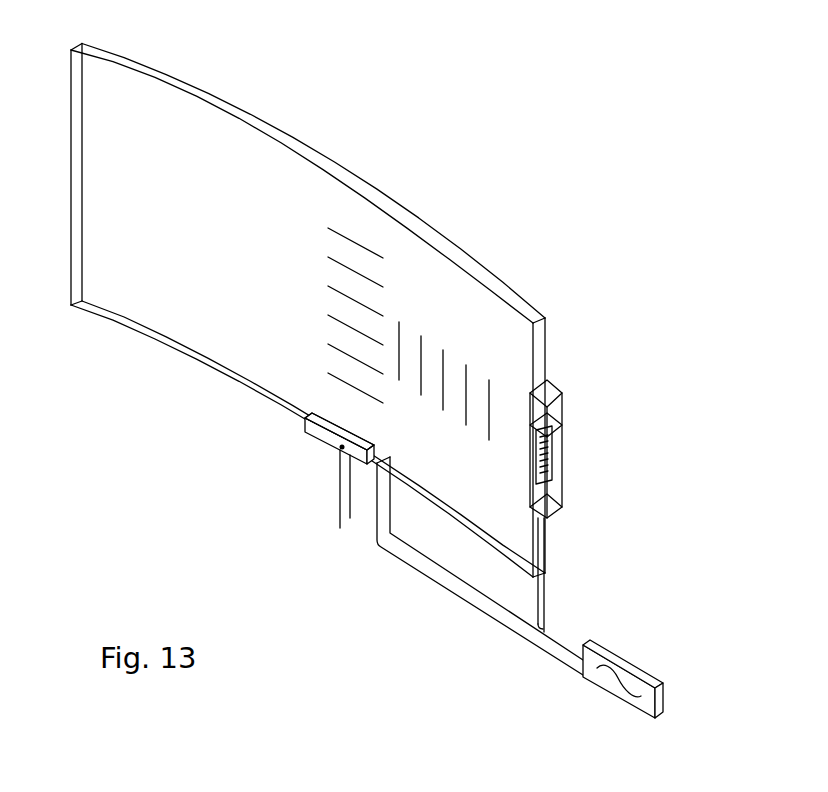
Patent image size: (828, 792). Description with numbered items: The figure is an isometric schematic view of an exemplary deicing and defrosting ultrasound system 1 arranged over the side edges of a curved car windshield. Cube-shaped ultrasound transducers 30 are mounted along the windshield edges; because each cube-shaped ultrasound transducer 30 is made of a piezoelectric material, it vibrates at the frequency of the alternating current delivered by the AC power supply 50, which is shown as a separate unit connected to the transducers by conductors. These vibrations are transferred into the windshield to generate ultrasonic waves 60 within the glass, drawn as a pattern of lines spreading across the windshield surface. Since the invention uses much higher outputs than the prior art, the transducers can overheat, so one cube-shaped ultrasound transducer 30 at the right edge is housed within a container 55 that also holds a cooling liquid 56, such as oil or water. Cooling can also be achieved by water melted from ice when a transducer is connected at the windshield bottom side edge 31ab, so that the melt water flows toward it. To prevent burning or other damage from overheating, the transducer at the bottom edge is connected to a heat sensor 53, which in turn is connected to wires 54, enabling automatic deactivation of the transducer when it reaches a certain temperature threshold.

The deicing and defrosting ultrasound system 1 is at (467, 130).
The windshield bottom side edge 31ab is at (197, 352).
The ultrasonic waves 60 is at (355, 240).
The cube-shaped ultrasound transducer 30 is at (552, 437).
The heat sensor 53 is at (342, 448).
The wires 54 is at (342, 457).
The container 55 is at (560, 418).
The liquid 56 is at (557, 507).
The AC power supply 50 is at (635, 670).